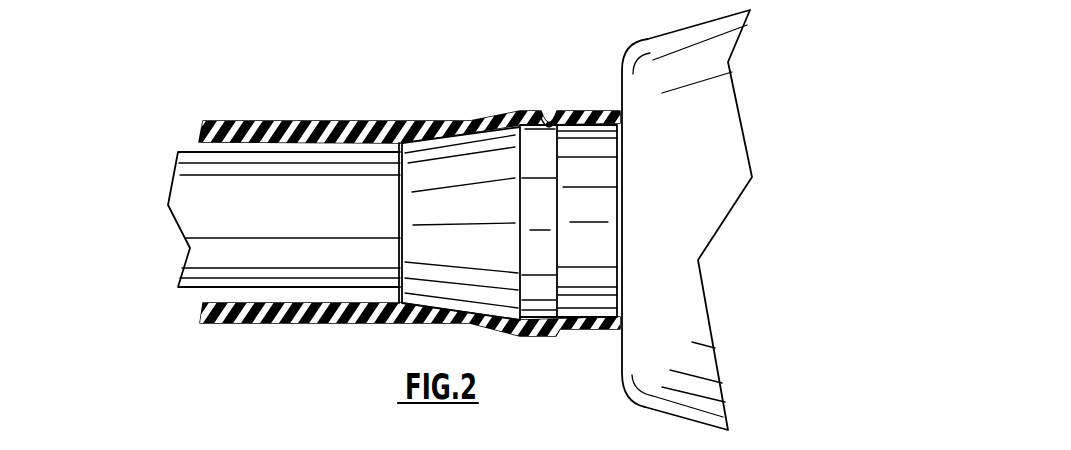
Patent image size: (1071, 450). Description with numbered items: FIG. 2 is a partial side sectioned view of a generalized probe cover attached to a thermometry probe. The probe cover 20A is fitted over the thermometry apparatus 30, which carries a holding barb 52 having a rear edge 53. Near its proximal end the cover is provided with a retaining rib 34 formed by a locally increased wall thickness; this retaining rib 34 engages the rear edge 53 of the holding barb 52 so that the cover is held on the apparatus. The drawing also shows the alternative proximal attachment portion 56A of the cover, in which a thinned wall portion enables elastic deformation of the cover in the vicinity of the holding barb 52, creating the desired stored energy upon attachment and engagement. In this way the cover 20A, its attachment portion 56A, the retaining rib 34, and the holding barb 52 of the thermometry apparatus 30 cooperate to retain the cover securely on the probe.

The hose/tube 20A is at (292, 121).
The sheath / outer cover 56A is at (416, 120).
The holding barb 52 is at (486, 148).
The rear edge 53 is at (543, 127).
The retaining rib 34 is at (581, 123).
The thermometry apparatus 30 is at (679, 68).